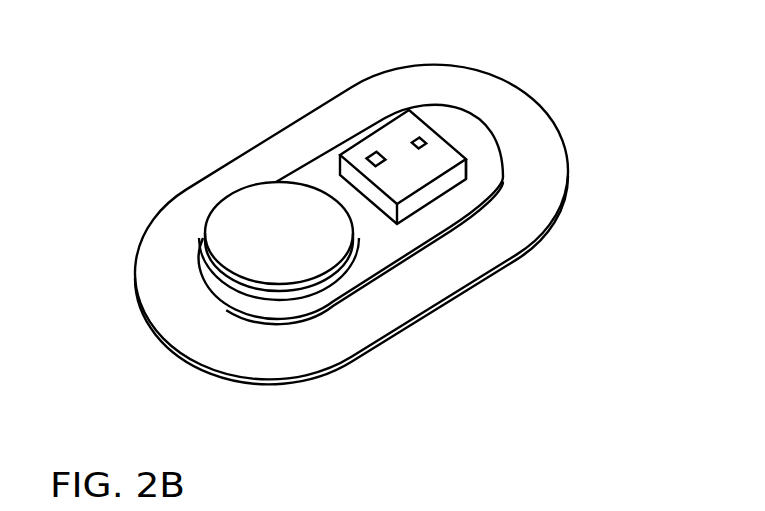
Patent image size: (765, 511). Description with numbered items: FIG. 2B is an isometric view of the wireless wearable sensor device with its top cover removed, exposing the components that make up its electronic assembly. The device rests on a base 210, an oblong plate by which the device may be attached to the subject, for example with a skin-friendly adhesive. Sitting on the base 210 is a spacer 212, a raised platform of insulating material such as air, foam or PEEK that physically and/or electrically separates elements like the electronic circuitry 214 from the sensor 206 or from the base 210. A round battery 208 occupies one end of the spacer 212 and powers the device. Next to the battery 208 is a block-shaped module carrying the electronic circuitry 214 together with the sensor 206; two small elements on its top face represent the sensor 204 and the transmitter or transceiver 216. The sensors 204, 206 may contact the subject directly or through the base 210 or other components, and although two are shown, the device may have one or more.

The sensor 204 is at (427, 138).
The sensor 206 is at (431, 186).
The battery 208 is at (250, 275).
The base 210 is at (209, 372).
The spacer 212 is at (495, 198).
The electronic circuitry 214 is at (469, 168).
The transmitter or transceiver 216 is at (381, 152).